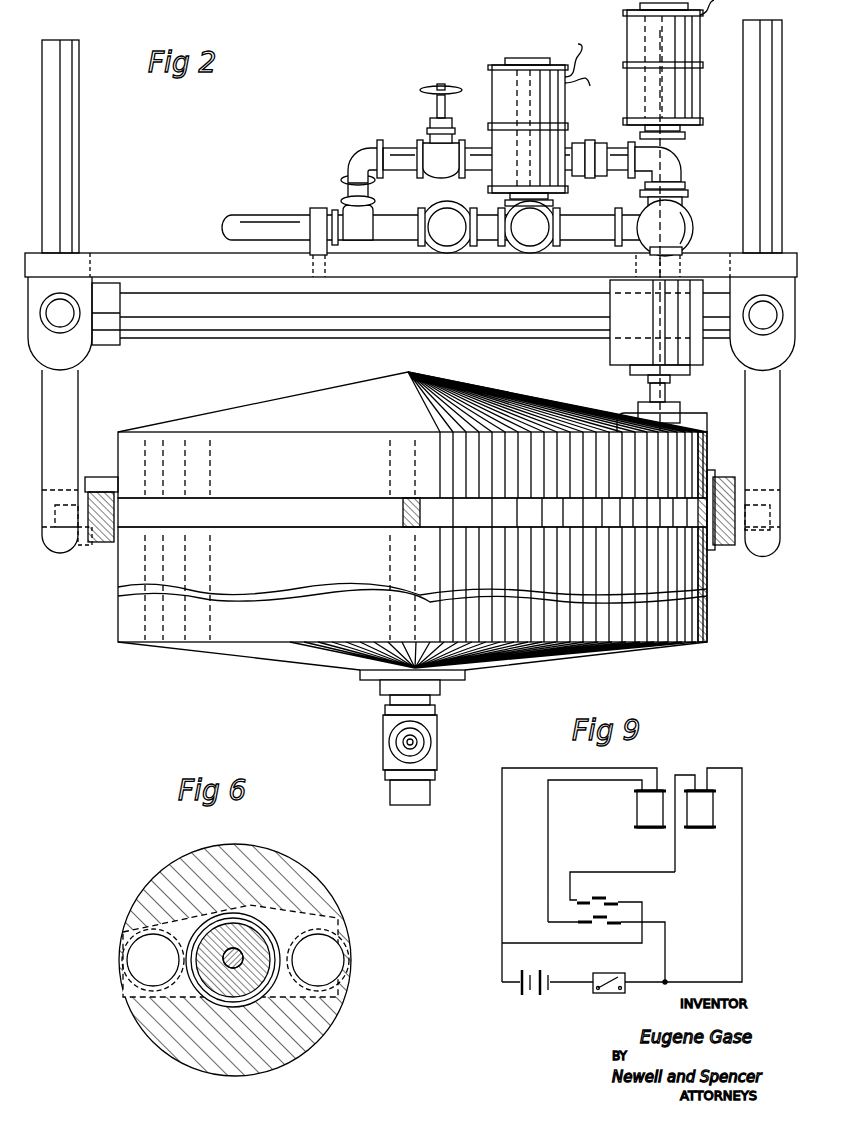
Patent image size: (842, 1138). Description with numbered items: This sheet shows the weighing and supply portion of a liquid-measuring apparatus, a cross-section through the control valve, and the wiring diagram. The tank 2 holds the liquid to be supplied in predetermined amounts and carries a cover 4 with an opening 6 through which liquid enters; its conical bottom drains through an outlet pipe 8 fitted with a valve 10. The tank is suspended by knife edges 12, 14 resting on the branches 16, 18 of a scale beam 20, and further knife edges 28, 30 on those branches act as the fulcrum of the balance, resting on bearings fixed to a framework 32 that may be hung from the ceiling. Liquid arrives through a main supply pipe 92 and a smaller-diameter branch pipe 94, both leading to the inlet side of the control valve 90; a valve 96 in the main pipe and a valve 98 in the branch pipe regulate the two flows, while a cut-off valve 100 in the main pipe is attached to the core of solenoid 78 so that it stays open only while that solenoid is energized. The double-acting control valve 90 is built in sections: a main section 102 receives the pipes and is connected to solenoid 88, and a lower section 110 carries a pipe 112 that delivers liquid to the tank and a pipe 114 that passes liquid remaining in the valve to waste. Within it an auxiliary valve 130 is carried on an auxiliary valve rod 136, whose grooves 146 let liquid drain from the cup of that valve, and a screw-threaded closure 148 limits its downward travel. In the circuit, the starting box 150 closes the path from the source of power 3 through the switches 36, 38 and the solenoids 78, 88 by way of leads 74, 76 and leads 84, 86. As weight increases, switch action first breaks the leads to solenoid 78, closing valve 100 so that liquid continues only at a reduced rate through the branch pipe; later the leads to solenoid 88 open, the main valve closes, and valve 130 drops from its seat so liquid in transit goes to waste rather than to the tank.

In FIG. 2, the tank 2 is at (712, 630).
In FIG. 2, the source of power 3 is at (668, 101).
In FIG. 9, the source of power 3 is at (522, 998).
In FIG. 2, the cover 4 is at (512, 403).
In FIG. 2, the opening 6 is at (678, 405).
In FIG. 2, the outlet pipe 8 is at (440, 707).
In FIG. 2, the valve 10 is at (440, 747).
In FIG. 2, the knife edge 12 is at (97, 478).
In FIG. 2, the knife edge 14 is at (725, 478).
In FIG. 2, the branch of scale beam 16 is at (236, 518).
In FIG. 2, the branch of scale beam 18 is at (665, 545).
In FIG. 2, the scale beam 20 is at (402, 520).
In FIG. 2, the knife edge 28 is at (84, 548).
In FIG. 2, the knife edge 30 is at (738, 548).
In FIG. 2, the framework 32 is at (80, 183).
In FIG. 9, the switch 36 is at (622, 900).
In FIG. 9, the switch 38 is at (603, 922).
In FIG. 2, the lead 74 is at (578, 44).
In FIG. 9, the lead 74 is at (568, 922).
In FIG. 2, the lead 76 is at (587, 90).
In FIG. 9, the lead 76 is at (655, 922).
In FIG. 2, the solenoid 78 is at (565, 97).
In FIG. 9, the solenoid 78 is at (638, 815).
In FIG. 9, the lead 84 is at (578, 900).
In FIG. 2, the lead 86 is at (712, 16).
In FIG. 9, the lead 86 is at (650, 912).
In FIG. 2, the solenoid 88 is at (627, 35).
In FIG. 9, the solenoid 88 is at (713, 813).
In FIG. 2, the control valve 90 is at (688, 229).
In FIG. 2, the supply pipe 92 is at (266, 222).
In FIG. 2, the branch pipe 94 is at (370, 186).
In FIG. 2, the valve 96 is at (450, 214).
In FIG. 2, the valve 98 is at (423, 132).
In FIG. 2, the cut-off valve 100 is at (525, 255).
In FIG. 2, the main section 102 is at (683, 165).
In FIG. 2, the section 110 is at (603, 355).
In FIG. 6, the section 110 is at (310, 872).
In FIG. 2, the pipe 112 is at (650, 393).
In FIG. 6, the pipe 112 is at (130, 957).
In FIG. 6, the pipe 114 is at (335, 948).
In FIG. 6, the valve 130 is at (207, 980).
In FIG. 6, the auxiliary valve rod 136 is at (213, 1000).
In FIG. 6, the grooves 146 is at (262, 962).
In FIG. 6, the closure 148 is at (240, 1007).
In FIG. 9, the starting box 150 is at (610, 996).